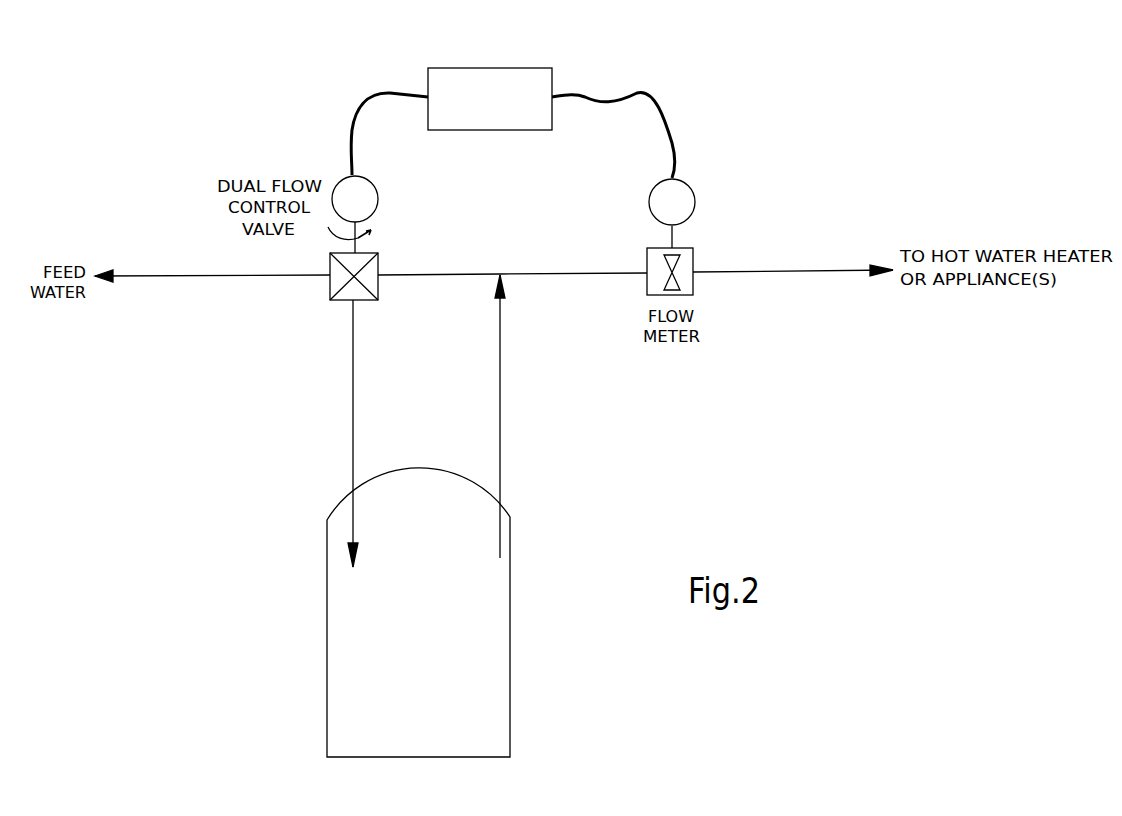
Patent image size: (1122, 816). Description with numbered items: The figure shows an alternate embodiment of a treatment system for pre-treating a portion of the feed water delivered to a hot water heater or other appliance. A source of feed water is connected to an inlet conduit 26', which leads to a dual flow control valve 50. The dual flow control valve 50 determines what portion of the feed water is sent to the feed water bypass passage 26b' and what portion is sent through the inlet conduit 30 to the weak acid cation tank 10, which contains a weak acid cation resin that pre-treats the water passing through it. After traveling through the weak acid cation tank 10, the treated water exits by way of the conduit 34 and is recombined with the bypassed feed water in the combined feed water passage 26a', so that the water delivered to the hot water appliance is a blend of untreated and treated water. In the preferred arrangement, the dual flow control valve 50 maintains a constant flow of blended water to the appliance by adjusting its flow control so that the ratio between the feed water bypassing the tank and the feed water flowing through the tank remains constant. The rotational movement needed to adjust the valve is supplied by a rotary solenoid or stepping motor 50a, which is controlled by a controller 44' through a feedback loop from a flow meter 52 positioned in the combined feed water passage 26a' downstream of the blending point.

The controller 44' is at (505, 81).
The rotary solenoid or stepping motor 50a is at (338, 178).
The dual flow control valve 50 is at (382, 238).
The inlet conduit 26' is at (212, 301).
The feed water bypass passage 26b' is at (439, 306).
The combined feed water passage 26a' is at (573, 306).
The flow meter 52 is at (695, 255).
The inlet conduit 30 is at (352, 373).
The conduit 34 is at (502, 412).
The weak acid cation tank 10 is at (495, 635).